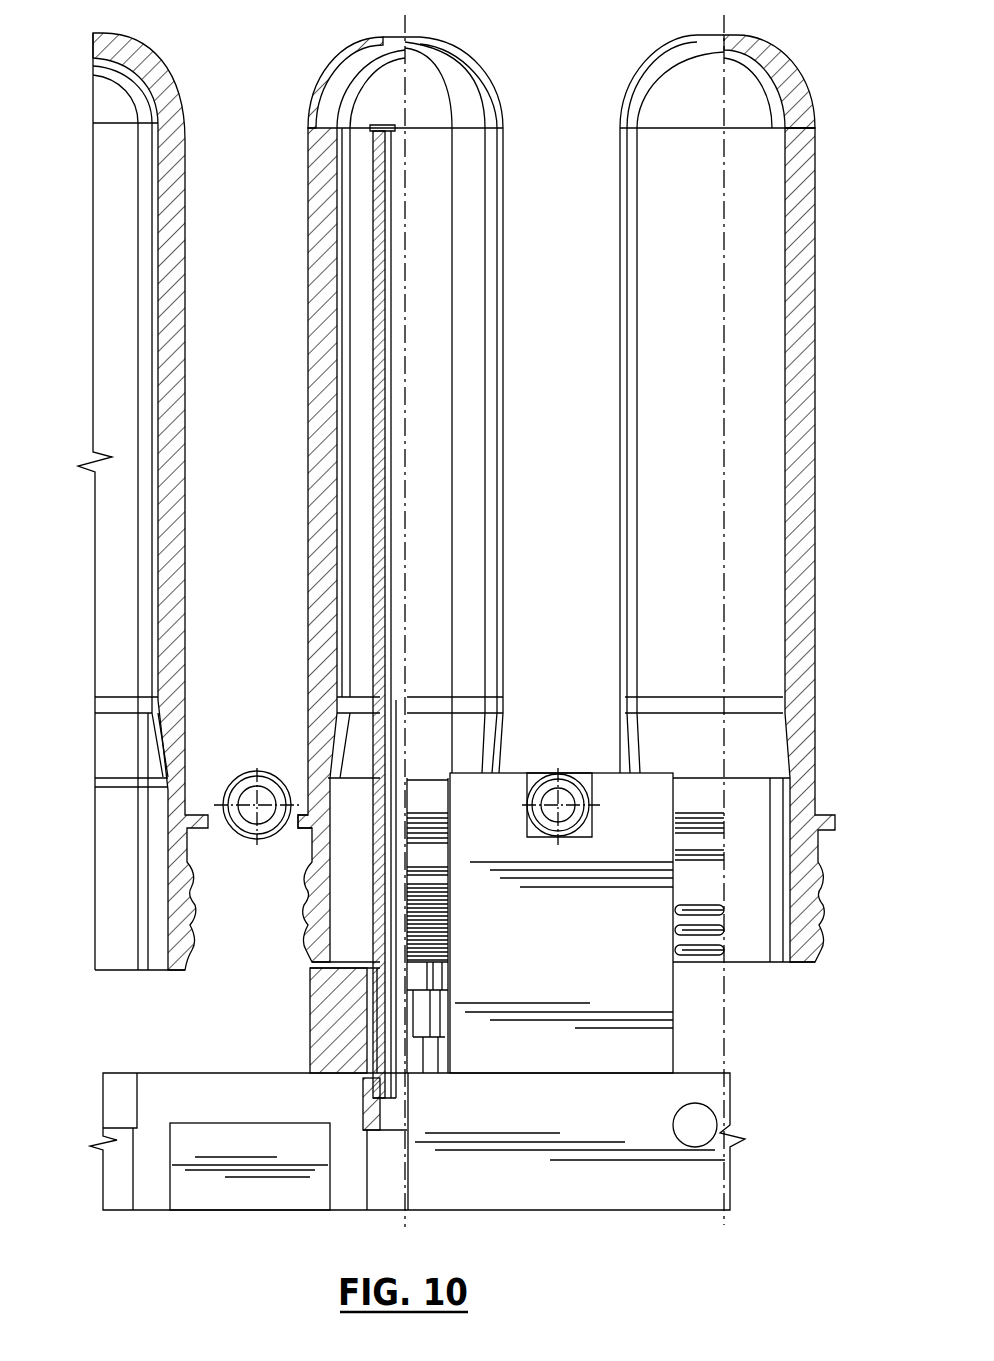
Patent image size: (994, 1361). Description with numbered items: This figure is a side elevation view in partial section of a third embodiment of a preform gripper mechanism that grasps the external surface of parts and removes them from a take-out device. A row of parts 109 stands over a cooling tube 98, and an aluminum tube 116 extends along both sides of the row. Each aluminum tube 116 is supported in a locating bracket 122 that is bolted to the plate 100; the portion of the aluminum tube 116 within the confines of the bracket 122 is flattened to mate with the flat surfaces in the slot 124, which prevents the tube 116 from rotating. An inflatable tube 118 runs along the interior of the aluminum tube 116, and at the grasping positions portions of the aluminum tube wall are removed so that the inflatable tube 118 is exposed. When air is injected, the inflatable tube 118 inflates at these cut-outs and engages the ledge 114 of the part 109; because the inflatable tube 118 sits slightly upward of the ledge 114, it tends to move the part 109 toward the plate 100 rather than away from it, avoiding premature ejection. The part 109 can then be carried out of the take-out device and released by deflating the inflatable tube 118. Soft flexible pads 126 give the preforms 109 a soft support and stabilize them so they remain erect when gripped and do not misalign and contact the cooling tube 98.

The cooling tube 98 is at (383, 206).
The plate 100 is at (575, 1125).
The part 109 is at (340, 78).
The ledge 114 is at (296, 832).
The aluminum tube 116 is at (250, 775).
The inflatable tube 118 is at (289, 782).
The locating bracket 122 is at (588, 993).
The slot 124 is at (583, 840).
The soft flexible pad 126 is at (310, 1032).